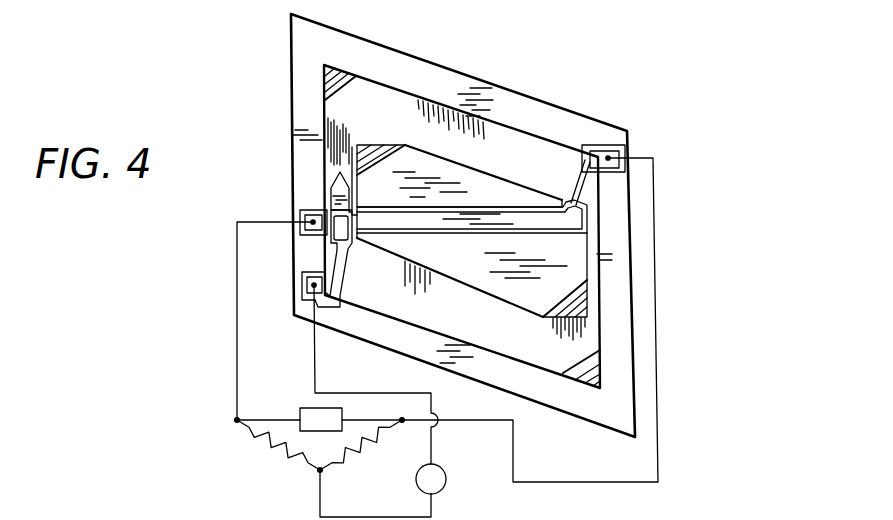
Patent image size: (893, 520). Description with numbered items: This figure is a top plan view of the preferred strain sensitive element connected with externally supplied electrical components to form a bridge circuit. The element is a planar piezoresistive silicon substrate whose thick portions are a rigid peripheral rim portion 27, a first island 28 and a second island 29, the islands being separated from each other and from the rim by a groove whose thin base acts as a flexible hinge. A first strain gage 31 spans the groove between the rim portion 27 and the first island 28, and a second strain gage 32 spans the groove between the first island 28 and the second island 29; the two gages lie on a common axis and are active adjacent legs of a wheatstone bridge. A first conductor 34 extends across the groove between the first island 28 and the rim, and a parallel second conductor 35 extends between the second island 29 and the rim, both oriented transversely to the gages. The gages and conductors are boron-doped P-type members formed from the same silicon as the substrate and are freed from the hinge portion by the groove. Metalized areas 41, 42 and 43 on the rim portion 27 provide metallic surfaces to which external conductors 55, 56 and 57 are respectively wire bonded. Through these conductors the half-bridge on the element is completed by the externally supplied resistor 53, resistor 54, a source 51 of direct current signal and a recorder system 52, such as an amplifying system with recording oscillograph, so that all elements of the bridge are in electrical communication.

The rigid peripheral rim portion 27 is at (557, 393).
The first island 28 is at (334, 186).
The second island 29 is at (489, 182).
The first strain gage 31 is at (330, 222).
The second strain gage 32 is at (358, 220).
The first conductor 34 is at (336, 264).
The second conductor 35 is at (582, 163).
The metalized area 41 is at (313, 222).
The metalized area 42 is at (314, 285).
The metalized area 43 is at (605, 152).
The source 51 is at (444, 490).
The recorder system 52 is at (304, 407).
The resistor 53 is at (361, 450).
The resistor 54 is at (279, 450).
The external conductor 55 is at (237, 360).
The external conductor 56 is at (316, 366).
The external conductor 57 is at (658, 387).